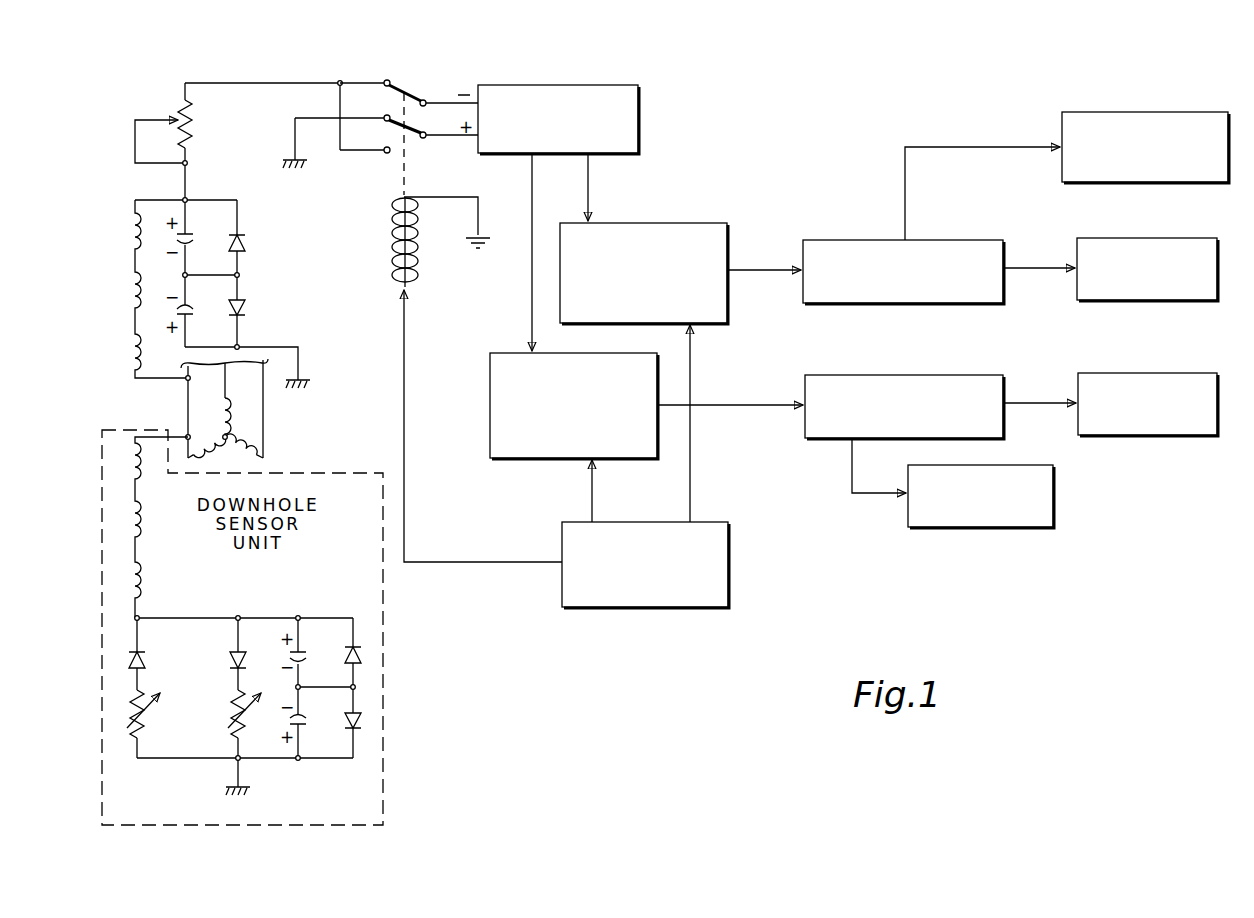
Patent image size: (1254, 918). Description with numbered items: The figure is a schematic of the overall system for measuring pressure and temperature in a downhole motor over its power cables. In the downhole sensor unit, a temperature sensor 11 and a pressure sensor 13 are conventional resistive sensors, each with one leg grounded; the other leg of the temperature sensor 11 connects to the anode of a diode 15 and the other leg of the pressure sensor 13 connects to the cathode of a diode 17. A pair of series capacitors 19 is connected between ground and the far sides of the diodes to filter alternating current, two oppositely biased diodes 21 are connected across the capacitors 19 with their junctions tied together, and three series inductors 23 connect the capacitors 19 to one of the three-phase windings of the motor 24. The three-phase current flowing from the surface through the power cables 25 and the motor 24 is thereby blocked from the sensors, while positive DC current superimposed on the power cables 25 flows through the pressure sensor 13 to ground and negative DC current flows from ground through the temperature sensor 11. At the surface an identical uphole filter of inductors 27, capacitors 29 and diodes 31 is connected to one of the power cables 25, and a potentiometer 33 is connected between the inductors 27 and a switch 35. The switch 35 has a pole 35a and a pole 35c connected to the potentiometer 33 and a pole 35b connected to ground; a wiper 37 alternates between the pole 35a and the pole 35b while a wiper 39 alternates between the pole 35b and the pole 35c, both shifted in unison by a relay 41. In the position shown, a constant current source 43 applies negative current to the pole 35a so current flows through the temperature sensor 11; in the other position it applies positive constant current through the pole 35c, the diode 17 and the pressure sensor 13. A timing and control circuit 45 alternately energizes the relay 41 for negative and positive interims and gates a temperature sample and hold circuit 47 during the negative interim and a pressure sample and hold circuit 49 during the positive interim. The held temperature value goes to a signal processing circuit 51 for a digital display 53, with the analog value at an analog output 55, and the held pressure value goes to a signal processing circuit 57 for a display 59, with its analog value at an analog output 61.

The temperature sensor 11 is at (150, 718).
The pressure sensor 13 is at (230, 728).
The diode 15 is at (145, 651).
The diode 17 is at (230, 668).
The capacitors 19 is at (300, 650).
The diodes 21 is at (360, 650).
The inductors 23 is at (148, 462).
The motor 24 is at (265, 440).
The power cables 25 is at (265, 398).
The inductors 27 is at (128, 355).
The capacitors 29 is at (190, 234).
The diodes 31 is at (240, 292).
The potentiometer 33 is at (190, 128).
The switch 35 is at (358, 82).
The pole 35a is at (395, 81).
The pole 35b is at (393, 119).
The pole 35c is at (390, 154).
The wiper 37 is at (396, 90).
The wiper 39 is at (416, 140).
The K-1 relay 41 is at (398, 253).
The constant current source 43 is at (536, 85).
The timing and control circuit 45 is at (729, 553).
The temperature sample and hold circuit 47 is at (630, 223).
The pressure sample and hold circuit 49 is at (490, 418).
The signal processing circuit 51 is at (857, 240).
The display 53 is at (1077, 297).
The analog output 55 is at (1060, 165).
The signal processing circuit 57 is at (895, 375).
The display 59 is at (1122, 373).
The analog output 61 is at (1053, 495).